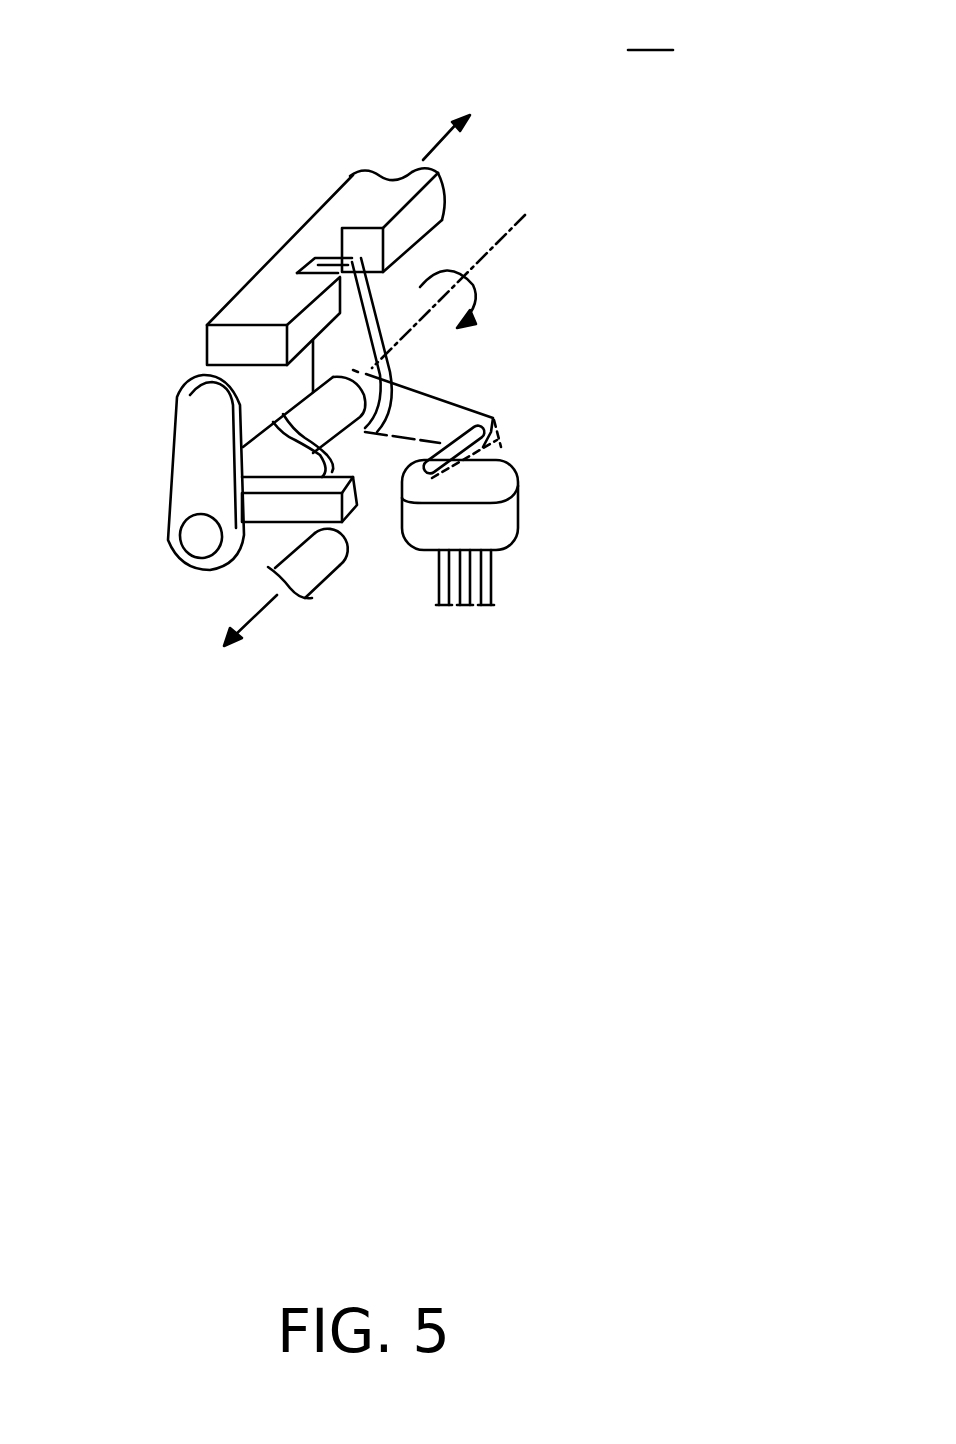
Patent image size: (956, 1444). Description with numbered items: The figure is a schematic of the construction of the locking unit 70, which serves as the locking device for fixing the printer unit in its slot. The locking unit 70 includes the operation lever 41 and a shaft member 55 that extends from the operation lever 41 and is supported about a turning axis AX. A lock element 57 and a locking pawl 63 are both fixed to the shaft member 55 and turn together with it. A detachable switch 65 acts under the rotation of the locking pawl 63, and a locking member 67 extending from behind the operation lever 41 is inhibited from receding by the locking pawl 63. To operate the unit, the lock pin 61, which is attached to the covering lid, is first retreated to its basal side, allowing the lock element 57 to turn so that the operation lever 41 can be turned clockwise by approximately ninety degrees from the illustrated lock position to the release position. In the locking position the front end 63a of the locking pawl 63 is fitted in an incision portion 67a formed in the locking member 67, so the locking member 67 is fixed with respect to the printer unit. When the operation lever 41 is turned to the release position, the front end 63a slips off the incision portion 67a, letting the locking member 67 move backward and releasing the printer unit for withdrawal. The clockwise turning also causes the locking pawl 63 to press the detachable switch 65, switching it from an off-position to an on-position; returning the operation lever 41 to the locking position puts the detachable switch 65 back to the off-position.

The locking unit 70 is at (359, 358).
The operation lever 41 is at (168, 487).
The shaft member 55 is at (288, 502).
The lock element 57 is at (348, 500).
The lock pin 61 is at (325, 567).
The locking pawl 63 is at (340, 348).
The front end of the locking pawl 63a is at (333, 262).
The detachable switch 65 is at (505, 514).
The locking member 67 is at (357, 193).
The incision portion 67a is at (336, 254).
The turning axis AX is at (504, 244).